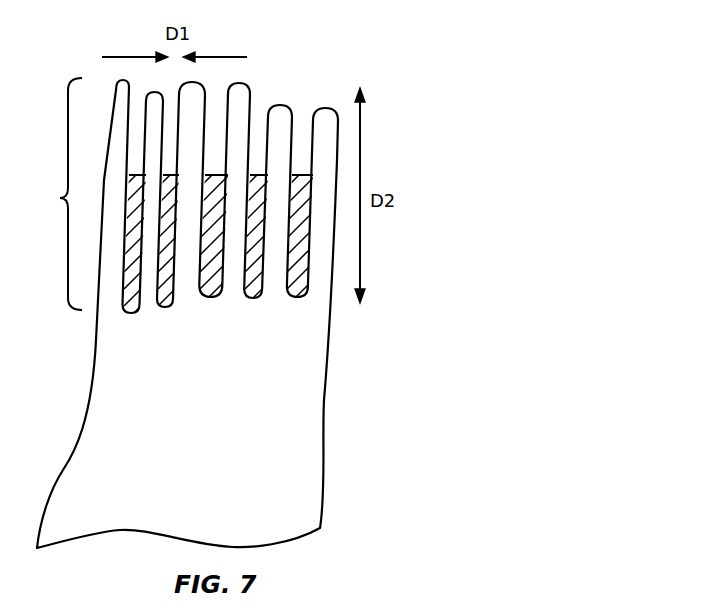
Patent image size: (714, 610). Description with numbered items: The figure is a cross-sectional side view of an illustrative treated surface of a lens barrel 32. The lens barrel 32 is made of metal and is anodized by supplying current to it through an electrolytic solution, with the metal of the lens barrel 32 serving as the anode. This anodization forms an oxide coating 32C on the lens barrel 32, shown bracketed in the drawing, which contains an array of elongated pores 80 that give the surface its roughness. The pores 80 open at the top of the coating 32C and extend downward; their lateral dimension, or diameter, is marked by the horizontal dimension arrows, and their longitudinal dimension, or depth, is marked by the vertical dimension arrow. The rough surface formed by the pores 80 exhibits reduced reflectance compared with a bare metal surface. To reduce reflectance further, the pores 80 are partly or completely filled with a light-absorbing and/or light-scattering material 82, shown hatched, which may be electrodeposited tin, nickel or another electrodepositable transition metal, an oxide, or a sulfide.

The lens barrel 32 is at (312, 458).
The coating 32C is at (51, 194).
The pores 80 is at (266, 84).
The material 82 is at (262, 280).